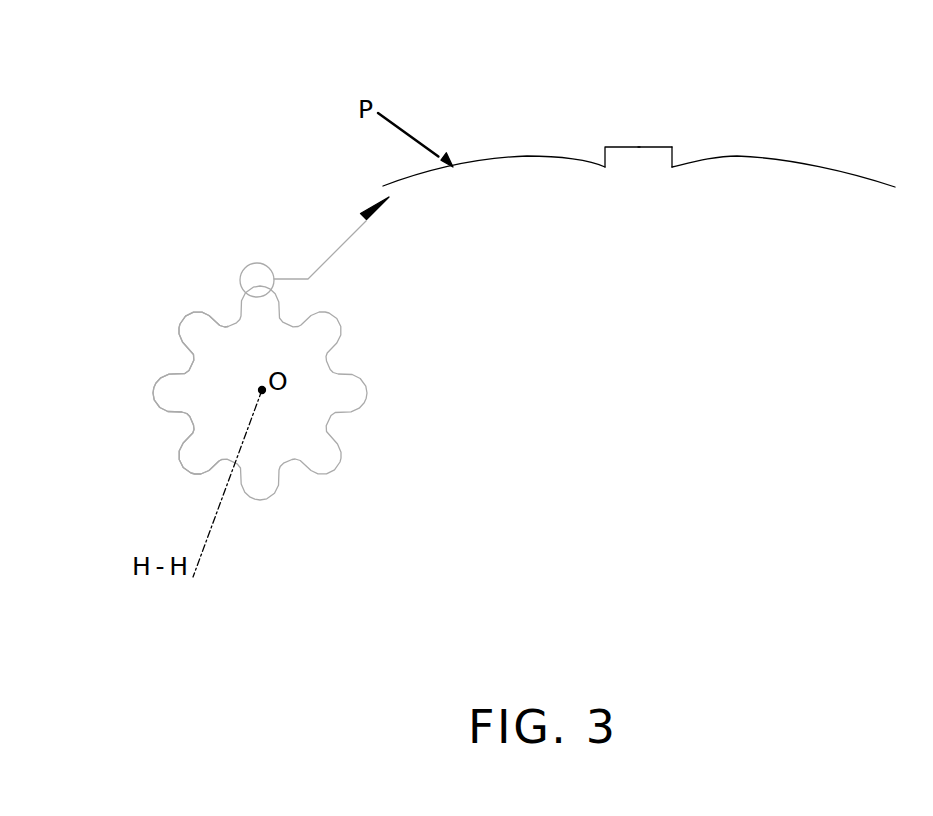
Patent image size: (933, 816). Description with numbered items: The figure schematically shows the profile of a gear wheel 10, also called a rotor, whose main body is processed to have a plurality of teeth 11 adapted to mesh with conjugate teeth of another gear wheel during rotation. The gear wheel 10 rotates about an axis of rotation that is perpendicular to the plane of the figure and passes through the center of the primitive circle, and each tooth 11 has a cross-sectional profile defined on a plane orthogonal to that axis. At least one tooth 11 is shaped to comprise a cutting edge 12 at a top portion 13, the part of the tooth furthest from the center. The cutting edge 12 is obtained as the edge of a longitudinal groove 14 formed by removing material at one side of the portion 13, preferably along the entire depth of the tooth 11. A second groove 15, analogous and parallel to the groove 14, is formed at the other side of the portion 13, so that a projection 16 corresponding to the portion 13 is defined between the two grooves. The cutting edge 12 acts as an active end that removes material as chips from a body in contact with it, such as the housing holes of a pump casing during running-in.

The gear wheel 10 is at (157, 315).
The tooth 11 is at (180, 343).
The cutting edge 12 is at (686, 135).
The portion 13 is at (620, 134).
The longitudinal groove 14 is at (690, 175).
The second groove 15 is at (603, 172).
The projection 16 is at (660, 136).